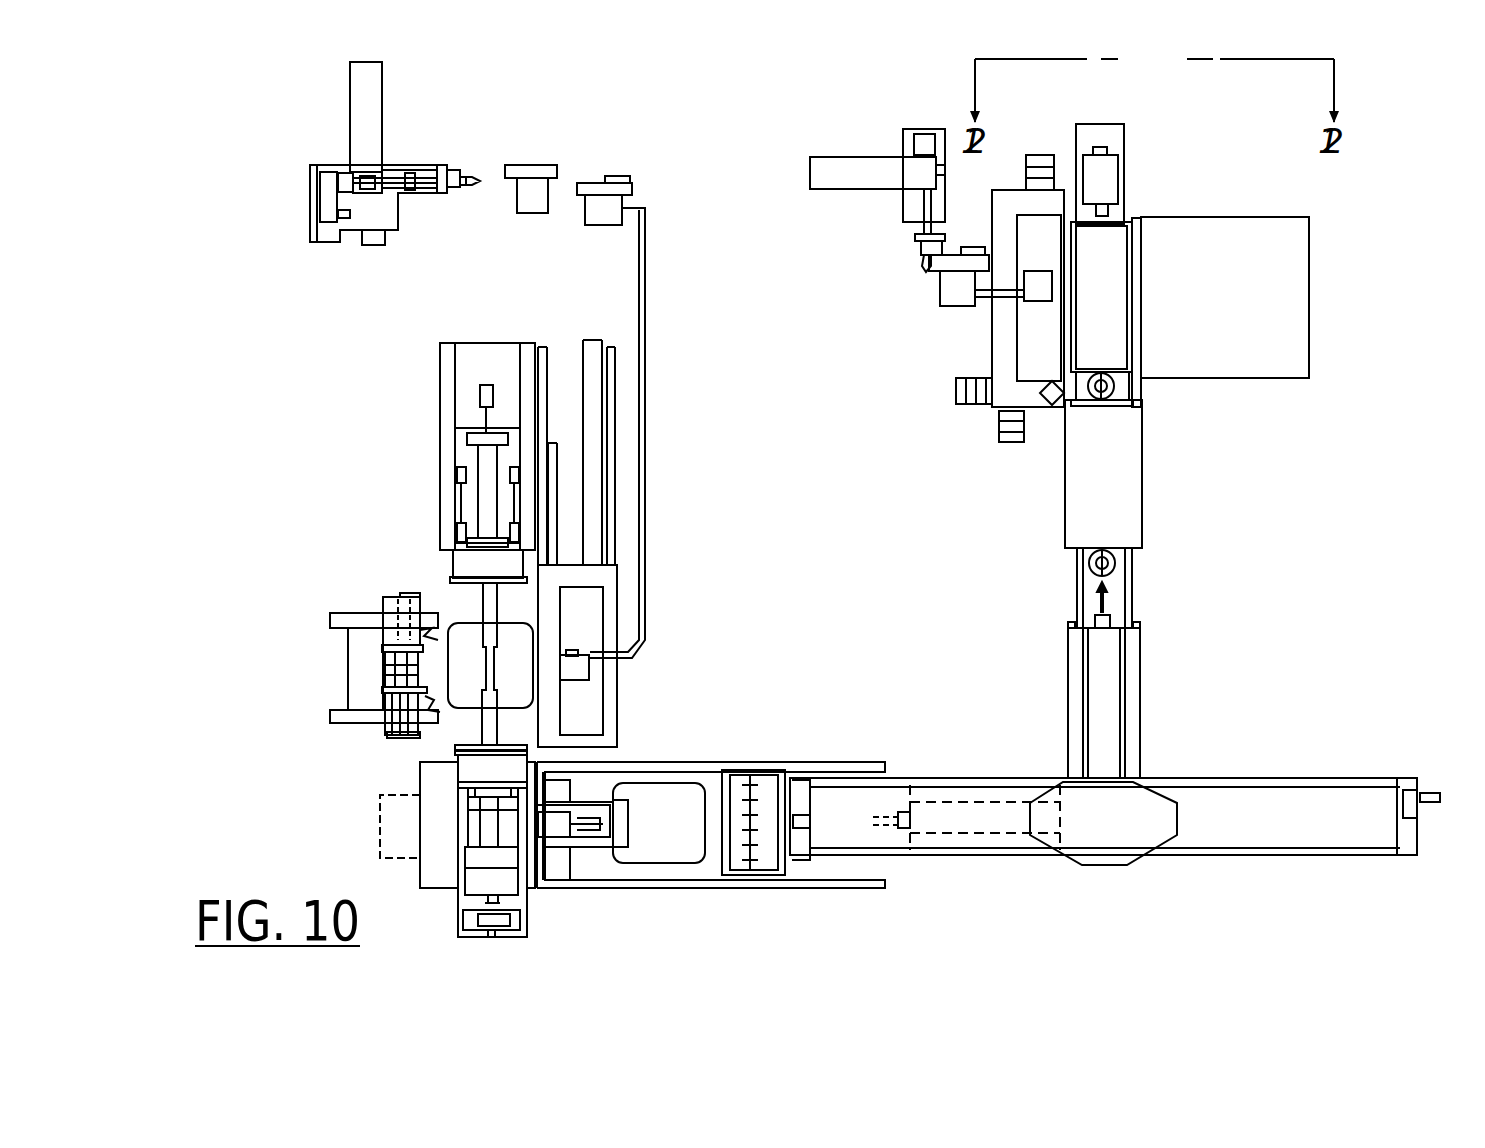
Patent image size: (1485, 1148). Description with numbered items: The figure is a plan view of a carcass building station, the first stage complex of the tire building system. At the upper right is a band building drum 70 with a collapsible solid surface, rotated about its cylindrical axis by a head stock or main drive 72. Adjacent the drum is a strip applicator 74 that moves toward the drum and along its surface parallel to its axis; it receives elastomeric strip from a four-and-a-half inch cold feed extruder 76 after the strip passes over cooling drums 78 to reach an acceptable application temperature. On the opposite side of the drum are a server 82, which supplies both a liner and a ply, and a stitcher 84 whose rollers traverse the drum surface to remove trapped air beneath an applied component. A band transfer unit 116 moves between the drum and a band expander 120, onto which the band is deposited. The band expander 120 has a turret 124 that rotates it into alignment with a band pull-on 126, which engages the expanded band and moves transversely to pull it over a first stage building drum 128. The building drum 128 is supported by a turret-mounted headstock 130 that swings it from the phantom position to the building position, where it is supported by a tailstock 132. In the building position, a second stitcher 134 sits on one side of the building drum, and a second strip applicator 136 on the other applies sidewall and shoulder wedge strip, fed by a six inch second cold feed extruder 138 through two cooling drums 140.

The band building drum 70 is at (1133, 257).
The head stock 72 is at (1108, 183).
The strip applicator 74 is at (987, 327).
The cold feed extruder 76 is at (914, 127).
The cooling drums 78 is at (940, 287).
The server 82 is at (1309, 281).
The stitcher 84 is at (1132, 382).
The band transfer unit 116 is at (1063, 492).
The band expander 120 is at (983, 783).
The turret 124 is at (1105, 858).
The band pull-on 126 is at (823, 758).
The first stage building drum 128 is at (452, 623).
The headstock 130 is at (459, 904).
The tailstock 132 is at (438, 474).
The second stitcher 134 is at (345, 677).
The second strip applicator 136 is at (623, 705).
The second cold feed extruder 138 is at (406, 145).
The cooling drums 140 is at (584, 190).